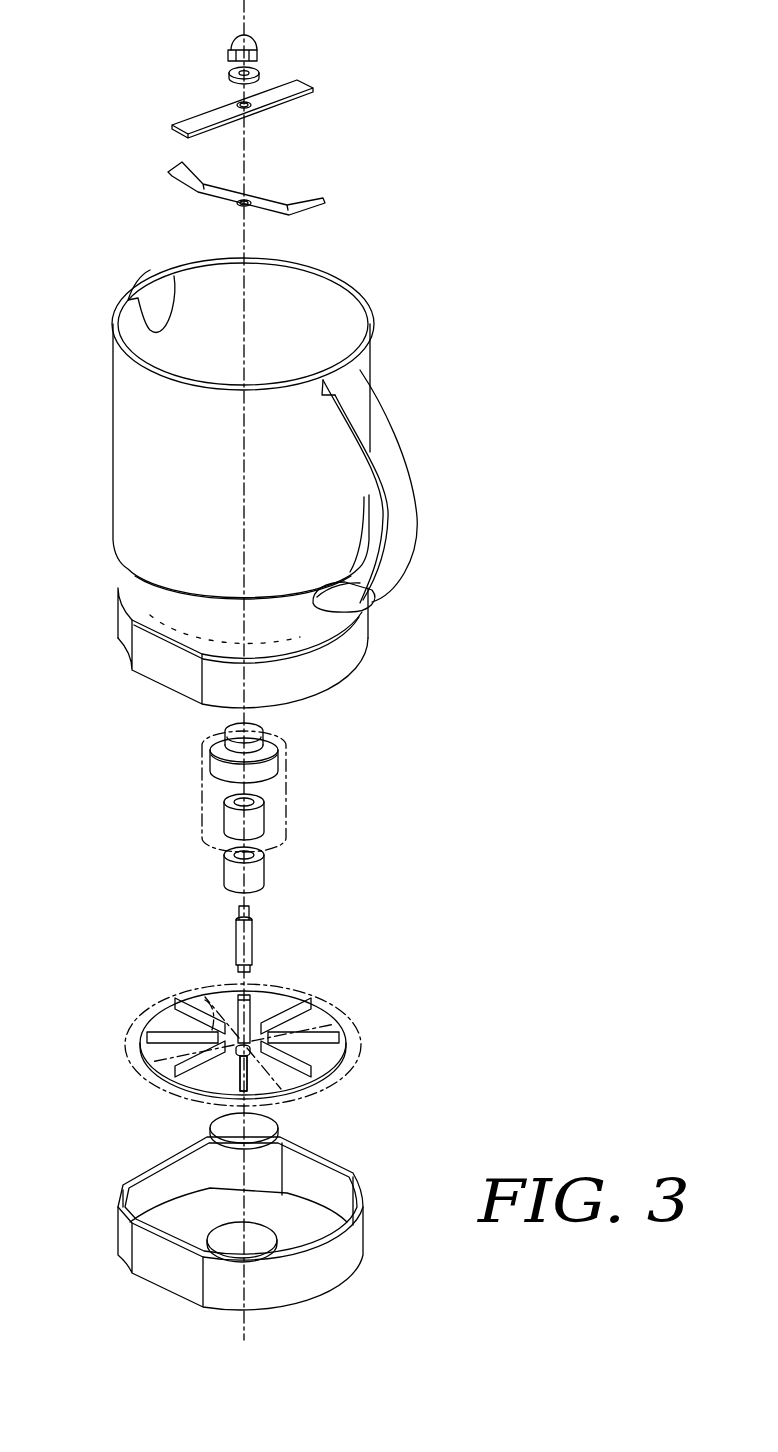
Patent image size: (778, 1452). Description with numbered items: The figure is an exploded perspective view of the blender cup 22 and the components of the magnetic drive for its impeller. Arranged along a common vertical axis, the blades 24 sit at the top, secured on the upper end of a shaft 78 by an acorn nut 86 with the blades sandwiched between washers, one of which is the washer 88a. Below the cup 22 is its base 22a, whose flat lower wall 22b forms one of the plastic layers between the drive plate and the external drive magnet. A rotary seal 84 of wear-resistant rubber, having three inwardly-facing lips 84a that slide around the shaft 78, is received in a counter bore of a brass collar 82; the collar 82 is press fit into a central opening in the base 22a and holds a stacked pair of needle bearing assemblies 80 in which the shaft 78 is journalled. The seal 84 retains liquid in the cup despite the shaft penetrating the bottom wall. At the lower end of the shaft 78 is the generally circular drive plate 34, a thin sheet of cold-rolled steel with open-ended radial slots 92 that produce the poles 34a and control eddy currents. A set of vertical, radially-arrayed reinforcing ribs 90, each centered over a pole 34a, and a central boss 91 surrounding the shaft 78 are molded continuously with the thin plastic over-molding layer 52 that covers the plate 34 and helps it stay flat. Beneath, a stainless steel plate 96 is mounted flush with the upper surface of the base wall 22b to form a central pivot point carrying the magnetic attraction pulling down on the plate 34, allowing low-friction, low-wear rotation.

The blender cup 22 is at (113, 451).
The base 22a is at (113, 635).
The flat lower wall 22b is at (292, 1213).
The impeller blades 24 is at (266, 202).
The drive plate 34 is at (231, 1041).
The poles 34a is at (326, 1020).
The plastic over-molding layer 52 is at (358, 1033).
The shaft 78 is at (253, 940).
The needle bearing assemblies 80 is at (262, 872).
The brass collar 82 is at (288, 797).
The rotary seal 84 is at (280, 752).
The lips 84a is at (258, 740).
The acorn nut 86 is at (256, 45).
The washer 88a is at (228, 73).
The reinforcing ribs 90 is at (210, 1000).
The central boss 91 is at (255, 995).
The radial slots 92 is at (195, 1085).
The stainless steel plate 96 is at (282, 1133).